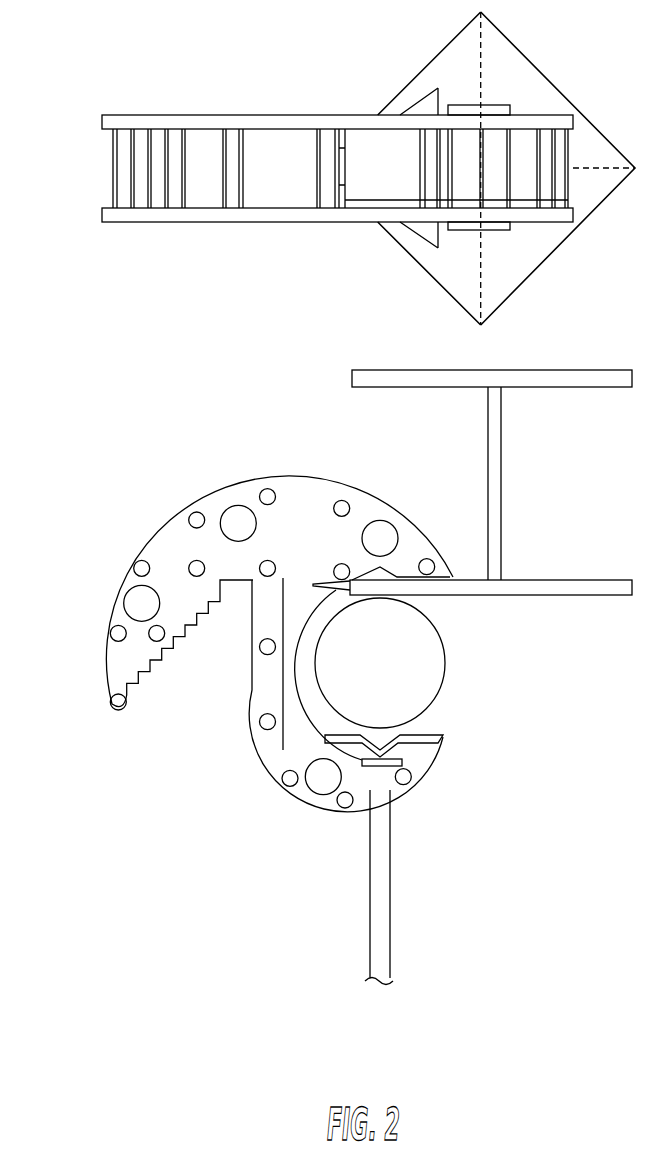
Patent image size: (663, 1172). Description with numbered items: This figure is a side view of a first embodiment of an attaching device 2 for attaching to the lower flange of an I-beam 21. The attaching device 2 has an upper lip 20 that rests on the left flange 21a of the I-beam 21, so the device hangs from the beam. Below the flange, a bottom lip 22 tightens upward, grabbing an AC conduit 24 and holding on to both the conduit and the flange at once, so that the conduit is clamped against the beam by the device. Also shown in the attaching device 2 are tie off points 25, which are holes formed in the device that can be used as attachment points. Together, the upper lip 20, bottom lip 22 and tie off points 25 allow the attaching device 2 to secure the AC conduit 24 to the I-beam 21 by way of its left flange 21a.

The attaching device 2 is at (100, 655).
The upper lip 20 is at (380, 567).
The I-beam 21 is at (487, 460).
The left flange 21a is at (453, 577).
The bottom lip 22 is at (380, 748).
The AC conduit 24 is at (403, 662).
The tie off points 25 is at (142, 603).